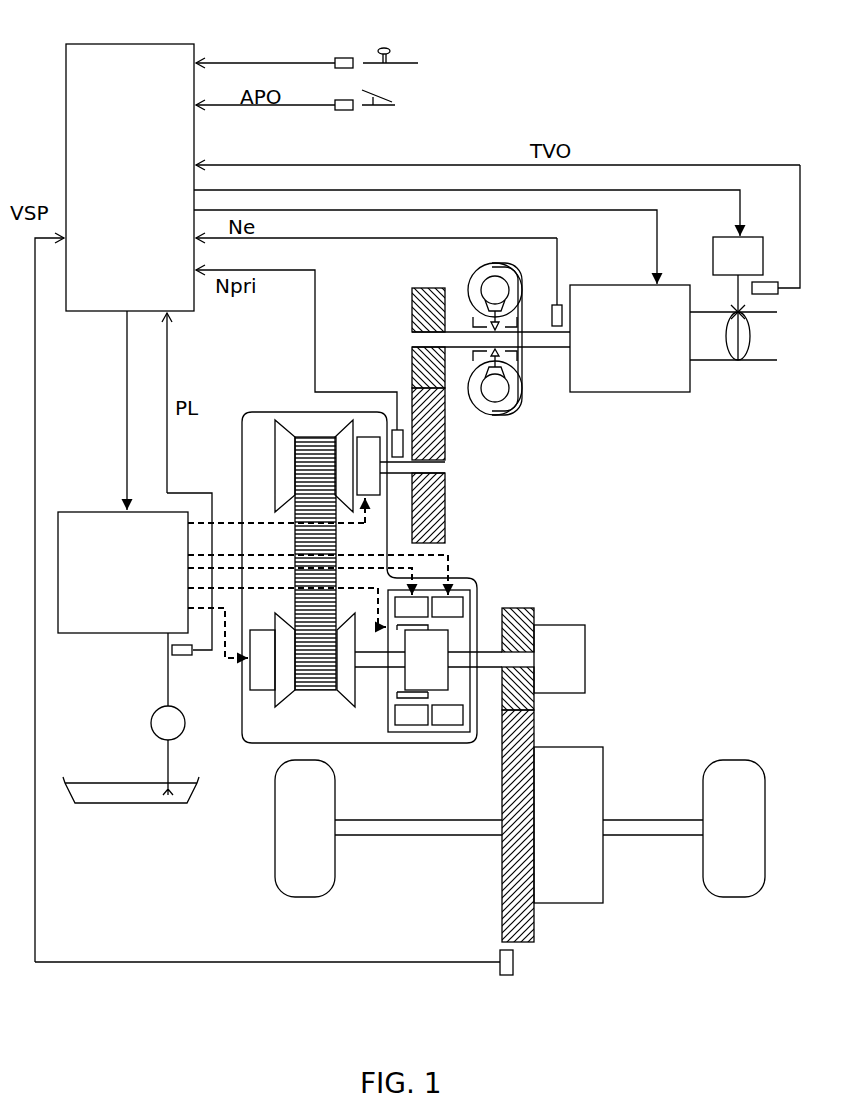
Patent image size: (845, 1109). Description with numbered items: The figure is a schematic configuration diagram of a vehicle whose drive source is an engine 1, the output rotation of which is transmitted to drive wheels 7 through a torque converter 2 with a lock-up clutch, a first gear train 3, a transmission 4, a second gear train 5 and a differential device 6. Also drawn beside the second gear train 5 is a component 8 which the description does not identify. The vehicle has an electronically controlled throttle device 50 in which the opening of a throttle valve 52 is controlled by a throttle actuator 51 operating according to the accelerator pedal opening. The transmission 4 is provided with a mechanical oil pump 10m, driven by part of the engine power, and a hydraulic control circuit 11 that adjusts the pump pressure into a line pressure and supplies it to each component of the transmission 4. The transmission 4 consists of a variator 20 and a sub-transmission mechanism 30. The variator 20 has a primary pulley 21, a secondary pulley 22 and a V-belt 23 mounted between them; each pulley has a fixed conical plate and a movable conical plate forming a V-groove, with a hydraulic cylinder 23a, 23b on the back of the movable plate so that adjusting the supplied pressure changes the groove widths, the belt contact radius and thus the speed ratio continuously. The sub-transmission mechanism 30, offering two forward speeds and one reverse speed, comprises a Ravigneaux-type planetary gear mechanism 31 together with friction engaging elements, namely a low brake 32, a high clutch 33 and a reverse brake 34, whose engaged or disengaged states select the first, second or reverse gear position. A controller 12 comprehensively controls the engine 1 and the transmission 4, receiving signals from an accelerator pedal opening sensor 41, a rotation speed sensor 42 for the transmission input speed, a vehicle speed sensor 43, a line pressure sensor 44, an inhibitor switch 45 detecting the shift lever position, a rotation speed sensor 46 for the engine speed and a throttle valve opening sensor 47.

The engine 1 is at (655, 382).
The torque converter 2 is at (522, 405).
The first gear train 3 is at (405, 300).
The transmission 4 is at (283, 412).
The second gear train 5 is at (536, 948).
The differential device 6 is at (568, 893).
The drive wheels 7 is at (305, 882).
The oil pump 8 is at (570, 652).
The mechanical oil pump 10m is at (183, 733).
The hydraulic control circuit 11 is at (82, 514).
The controller 12 is at (181, 47).
The variator 20 is at (291, 543).
The primary pulley 21 is at (285, 466).
The secondary pulley 22 is at (288, 676).
The V-belt 23 is at (315, 437).
The hydraulic cylinder 23a is at (365, 450).
The hydraulic cylinder 23b is at (258, 680).
The sub-transmission mechanism 30 is at (455, 617).
The Ravigneaux-type planetary gear mechanism 31 is at (430, 655).
The low brake 32 is at (415, 606).
The high clutch 33 is at (410, 696).
The reverse brake 34 is at (450, 606).
The accelerator pedal opening sensor 41 is at (344, 110).
The rotation speed sensor 42 is at (397, 428).
The vehicle speed sensor 43 is at (500, 972).
The line pressure sensor 44 is at (183, 656).
The inhibitor switch 45 is at (341, 57).
The rotation speed sensor 46 is at (550, 318).
The throttle valve opening sensor 47 is at (775, 281).
The electronically controlled throttle device 50 is at (730, 328).
The throttle actuator 51 is at (713, 255).
The throttle valve 52 is at (733, 362).